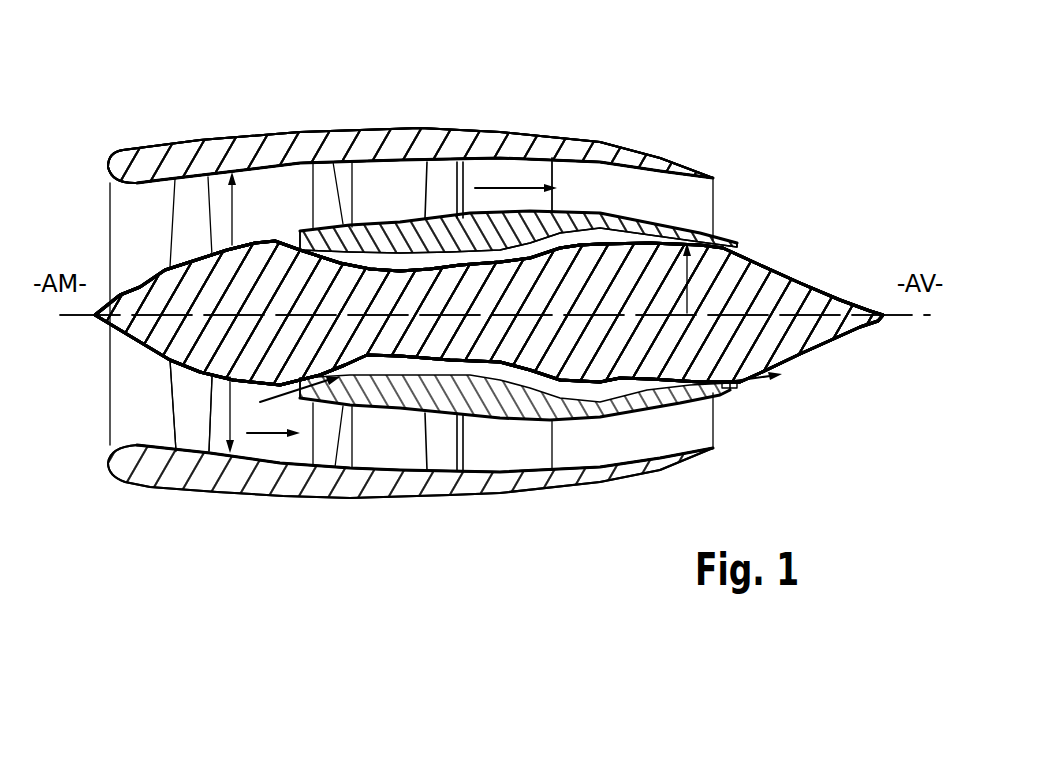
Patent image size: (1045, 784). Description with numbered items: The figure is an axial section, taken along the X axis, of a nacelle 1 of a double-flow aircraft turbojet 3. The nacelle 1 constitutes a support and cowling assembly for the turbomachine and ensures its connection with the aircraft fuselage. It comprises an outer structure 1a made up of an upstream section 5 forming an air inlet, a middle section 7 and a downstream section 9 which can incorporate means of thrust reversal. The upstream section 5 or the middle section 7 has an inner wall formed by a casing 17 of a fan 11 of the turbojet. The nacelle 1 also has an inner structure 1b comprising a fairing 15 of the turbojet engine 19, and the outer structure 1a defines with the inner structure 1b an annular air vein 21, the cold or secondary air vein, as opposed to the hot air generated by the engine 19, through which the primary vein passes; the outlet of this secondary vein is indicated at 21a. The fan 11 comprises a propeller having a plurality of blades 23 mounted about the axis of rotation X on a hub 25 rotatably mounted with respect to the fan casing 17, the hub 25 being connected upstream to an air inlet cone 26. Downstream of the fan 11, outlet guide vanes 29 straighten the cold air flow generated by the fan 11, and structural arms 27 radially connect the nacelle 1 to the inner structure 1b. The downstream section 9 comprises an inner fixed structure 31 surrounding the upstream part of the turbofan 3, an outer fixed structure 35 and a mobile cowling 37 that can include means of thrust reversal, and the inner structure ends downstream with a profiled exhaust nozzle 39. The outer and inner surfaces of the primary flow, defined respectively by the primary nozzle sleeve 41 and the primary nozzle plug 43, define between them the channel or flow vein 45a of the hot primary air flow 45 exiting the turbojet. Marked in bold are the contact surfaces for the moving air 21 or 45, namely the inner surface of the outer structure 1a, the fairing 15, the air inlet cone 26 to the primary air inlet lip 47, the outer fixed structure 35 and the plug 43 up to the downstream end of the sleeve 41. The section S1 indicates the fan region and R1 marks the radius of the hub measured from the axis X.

The nacelle 1 is at (223, 95).
The outer structure 1a is at (333, 118).
The inner structure 1b is at (695, 215).
The double-flow aircraft turbojet 3 is at (180, 345).
The upstream section 5 is at (100, 148).
The middle section 7 is at (407, 128).
The downstream section 9 is at (625, 492).
The fan 11 is at (193, 195).
The fairing 15 is at (563, 210).
The fan casing 17 is at (265, 128).
The turbojet engine 19 is at (489, 313).
The annular air vein 21 is at (492, 183).
The secondary duct outlet 21a is at (605, 193).
The blades 23 is at (190, 413).
The hub 25 is at (167, 325).
The air inlet cone 26 is at (137, 292).
The structural arms 27 is at (442, 448).
The outlet guide vanes 29 is at (327, 440).
The inner fixed structure 31 is at (613, 378).
The outer fixed structure 35 is at (507, 420).
The mobile cowling 37 is at (650, 463).
The profiled exhaust nozzle 39 is at (825, 222).
The primary nozzle sleeve 41 is at (727, 388).
The primary nozzle plug 43 is at (840, 307).
The primary air flow 45 is at (747, 382).
The flow vein of the primary air flow 45a is at (517, 375).
The primary air inlet lip 47 is at (297, 400).
The fan section S1 is at (233, 223).
The hub radius R1 is at (702, 278).
The axis X is at (900, 342).